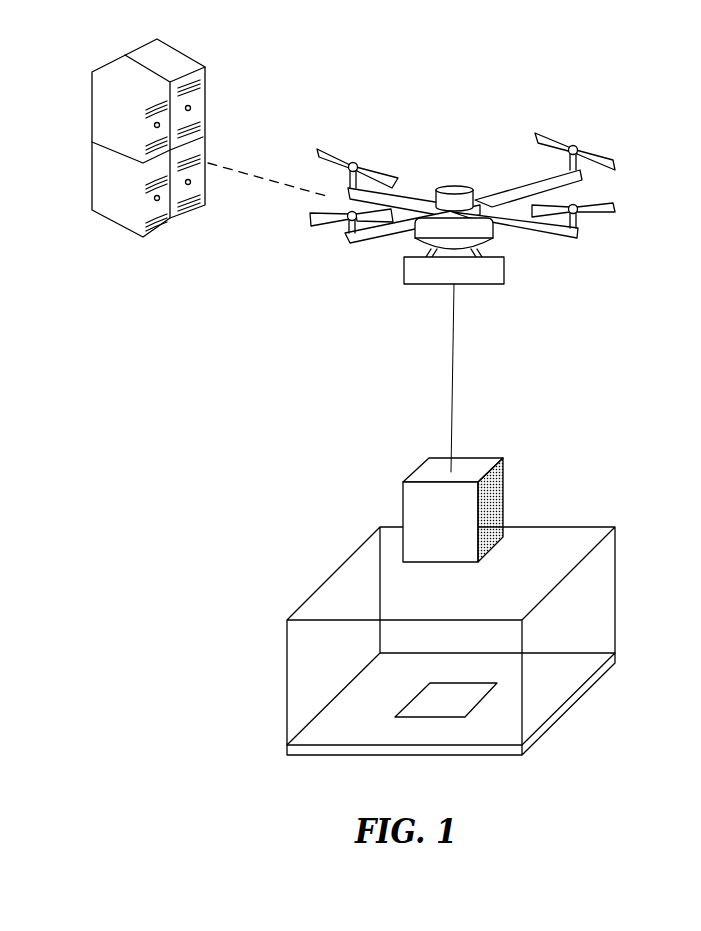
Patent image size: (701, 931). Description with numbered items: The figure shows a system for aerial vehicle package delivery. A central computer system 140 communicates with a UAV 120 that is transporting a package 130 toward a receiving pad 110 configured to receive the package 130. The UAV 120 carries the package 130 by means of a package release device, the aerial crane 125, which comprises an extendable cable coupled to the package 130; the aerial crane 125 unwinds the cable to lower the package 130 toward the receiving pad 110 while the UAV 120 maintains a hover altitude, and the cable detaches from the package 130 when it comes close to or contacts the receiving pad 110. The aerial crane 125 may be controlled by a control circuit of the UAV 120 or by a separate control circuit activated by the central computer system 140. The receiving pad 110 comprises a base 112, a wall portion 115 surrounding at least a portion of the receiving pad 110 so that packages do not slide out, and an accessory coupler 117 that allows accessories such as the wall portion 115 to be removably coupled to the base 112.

The receiving pad 110 is at (432, 641).
The base 112 is at (567, 713).
The wall portion 115 is at (605, 603).
The accessory coupler 117 is at (417, 702).
The UAV 120 is at (457, 186).
The aerial crane 125 is at (495, 285).
The package 130 is at (500, 484).
The central computer system 140 is at (150, 184).